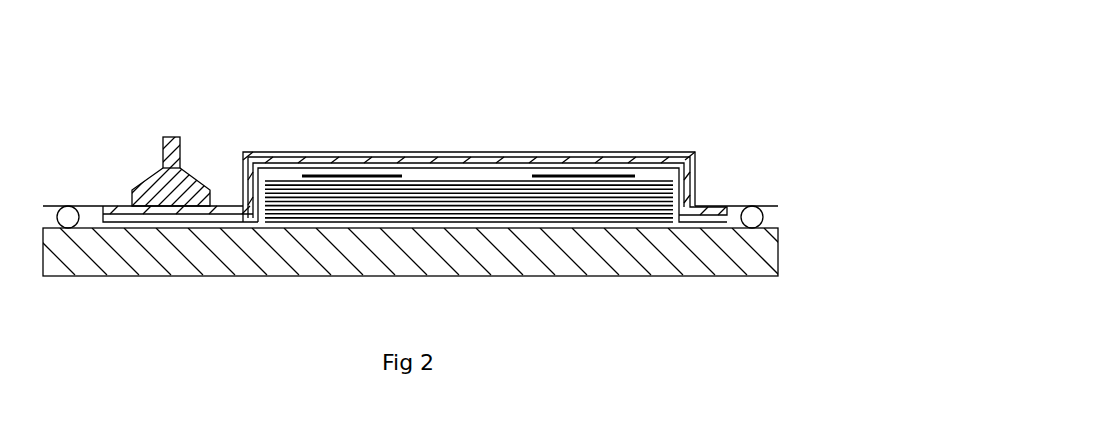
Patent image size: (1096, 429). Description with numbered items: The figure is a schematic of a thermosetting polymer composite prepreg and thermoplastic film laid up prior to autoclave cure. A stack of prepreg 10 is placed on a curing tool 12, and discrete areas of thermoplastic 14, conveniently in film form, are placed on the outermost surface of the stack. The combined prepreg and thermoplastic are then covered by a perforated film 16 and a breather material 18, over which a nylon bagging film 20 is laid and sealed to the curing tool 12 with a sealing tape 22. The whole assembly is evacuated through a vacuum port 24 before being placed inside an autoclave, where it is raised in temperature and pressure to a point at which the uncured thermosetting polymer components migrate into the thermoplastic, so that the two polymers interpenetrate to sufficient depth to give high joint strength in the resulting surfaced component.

The stack of prepreg 10 is at (552, 129).
The curing tool 12 is at (808, 262).
The discrete areas of thermoplastic 14 is at (600, 175).
The perforated film 16 is at (718, 167).
The breather material 18 is at (665, 158).
The nylon bagging film 20 is at (610, 152).
The sealing tape 22 is at (808, 213).
The vacuum port 24 is at (225, 155).